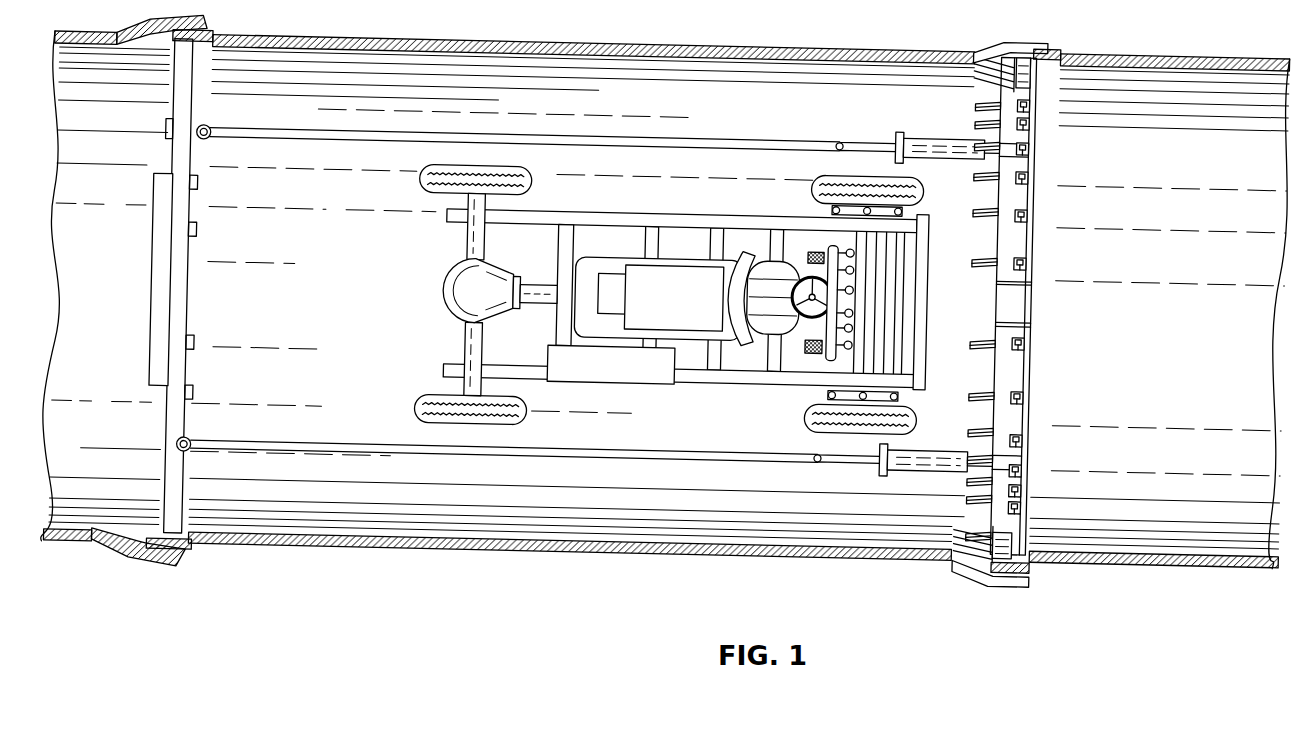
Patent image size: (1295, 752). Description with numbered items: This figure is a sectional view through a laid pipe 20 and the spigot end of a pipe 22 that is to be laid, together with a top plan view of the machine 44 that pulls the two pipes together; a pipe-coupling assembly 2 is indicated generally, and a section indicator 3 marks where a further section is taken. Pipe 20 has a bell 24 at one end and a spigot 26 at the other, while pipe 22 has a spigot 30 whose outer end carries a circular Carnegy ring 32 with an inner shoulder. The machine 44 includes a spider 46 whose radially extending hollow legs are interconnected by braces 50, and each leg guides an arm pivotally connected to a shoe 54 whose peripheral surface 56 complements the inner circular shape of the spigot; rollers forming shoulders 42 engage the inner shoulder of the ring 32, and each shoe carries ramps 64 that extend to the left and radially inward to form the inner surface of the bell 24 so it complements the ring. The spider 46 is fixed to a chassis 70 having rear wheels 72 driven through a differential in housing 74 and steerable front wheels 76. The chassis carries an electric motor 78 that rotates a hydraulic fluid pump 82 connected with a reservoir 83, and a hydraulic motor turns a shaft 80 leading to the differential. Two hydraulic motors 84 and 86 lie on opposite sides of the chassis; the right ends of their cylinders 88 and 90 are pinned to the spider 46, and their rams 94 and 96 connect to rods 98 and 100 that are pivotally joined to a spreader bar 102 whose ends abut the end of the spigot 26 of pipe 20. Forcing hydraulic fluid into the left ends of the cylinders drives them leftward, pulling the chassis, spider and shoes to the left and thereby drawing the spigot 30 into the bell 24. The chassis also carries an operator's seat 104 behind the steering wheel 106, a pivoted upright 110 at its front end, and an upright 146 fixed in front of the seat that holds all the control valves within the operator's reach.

The bulkhead and seal assembly 2 is at (1029, 306).
The section line indicator 3 is at (986, 280).
The pipe 20 is at (615, 556).
The pipe 22 is at (1182, 575).
The bell 24 is at (1032, 42).
The spigot 26 is at (214, 46).
The spigot 30 is at (1048, 68).
The circular ring 32 is at (216, 30).
The shoulders 42 is at (1032, 212).
The machine 44 is at (663, 299).
The spider 46 is at (1022, 306).
The braces 50 is at (1020, 302).
The shoe 54 is at (1034, 240).
The peripheral surface 56 is at (1025, 140).
The ramps 64 is at (975, 70).
The chassis 70 is at (612, 210).
The rear wheels 72 is at (420, 181).
The housing 74 is at (444, 298).
The front wheels 76 is at (812, 189).
The electric motor 78 is at (673, 298).
The shaft 80 is at (538, 305).
The fluid pump 82 is at (613, 293).
The reservoir 83 is at (611, 364).
The hydraulic motor 84 is at (908, 138).
The hydraulic motor 86 is at (903, 471).
The cylinder 88 is at (962, 140).
The cylinder 90 is at (950, 478).
The ram 94 is at (843, 144).
The ram 96 is at (829, 463).
The rod 98 is at (594, 140).
The rod 100 is at (592, 460).
The spreader bar 102 is at (190, 312).
The operator's seat 104 is at (789, 298).
The steering wheel 106 is at (818, 297).
The upright 110 is at (925, 303).
The upright 146 is at (824, 357).